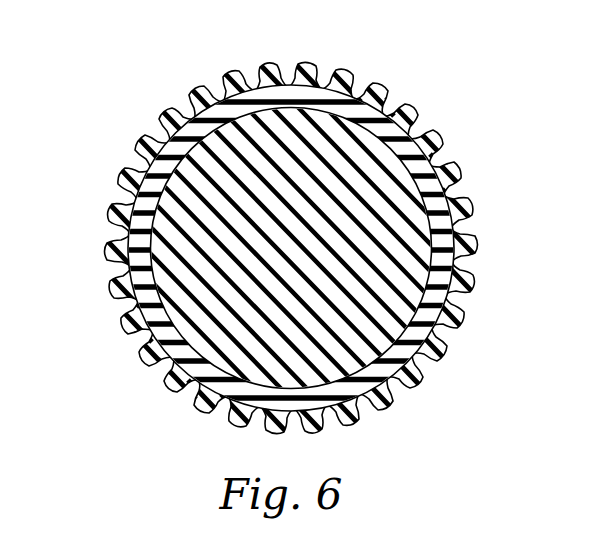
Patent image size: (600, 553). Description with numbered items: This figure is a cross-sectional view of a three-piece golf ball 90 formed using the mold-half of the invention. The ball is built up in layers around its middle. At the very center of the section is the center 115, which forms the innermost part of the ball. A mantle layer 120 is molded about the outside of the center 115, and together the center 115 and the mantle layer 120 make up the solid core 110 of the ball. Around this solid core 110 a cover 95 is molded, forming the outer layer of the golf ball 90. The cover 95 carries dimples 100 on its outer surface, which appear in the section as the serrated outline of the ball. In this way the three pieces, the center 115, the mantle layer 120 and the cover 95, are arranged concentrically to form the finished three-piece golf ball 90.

The three-piece golf ball 90 is at (300, 234).
The cover 95 is at (266, 210).
The dimples 100 is at (367, 84).
The solid core 110 is at (300, 250).
The center 115 is at (373, 213).
The mantle layer 120 is at (251, 100).